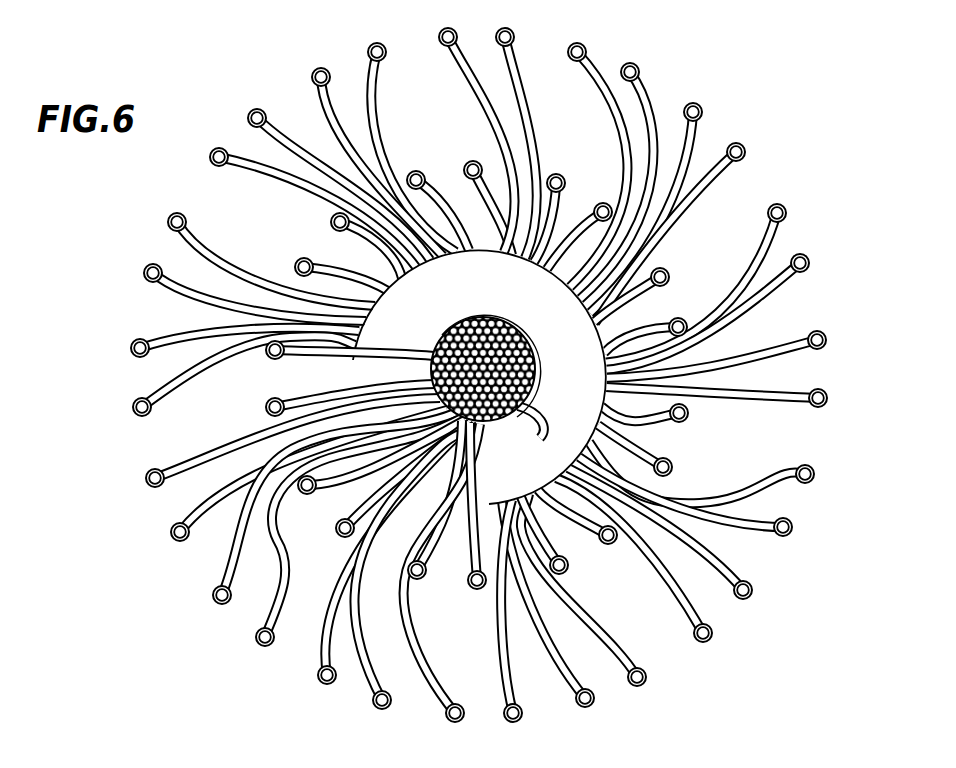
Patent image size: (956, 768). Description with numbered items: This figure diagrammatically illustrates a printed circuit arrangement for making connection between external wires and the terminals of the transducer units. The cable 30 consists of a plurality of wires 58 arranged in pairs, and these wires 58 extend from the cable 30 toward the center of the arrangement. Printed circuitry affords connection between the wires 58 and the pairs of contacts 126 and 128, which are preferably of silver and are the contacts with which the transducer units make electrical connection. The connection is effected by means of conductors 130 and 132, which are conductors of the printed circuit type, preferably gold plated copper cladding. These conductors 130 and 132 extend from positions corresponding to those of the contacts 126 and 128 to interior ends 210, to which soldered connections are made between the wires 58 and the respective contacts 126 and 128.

The cable 30 is at (489, 320).
The interior ends 210 is at (593, 320).
The wires 58 is at (503, 443).
The conductors 130 is at (749, 484).
The contacts 126 is at (812, 476).
The contacts 128 is at (794, 528).
The conductors 132 is at (748, 529).